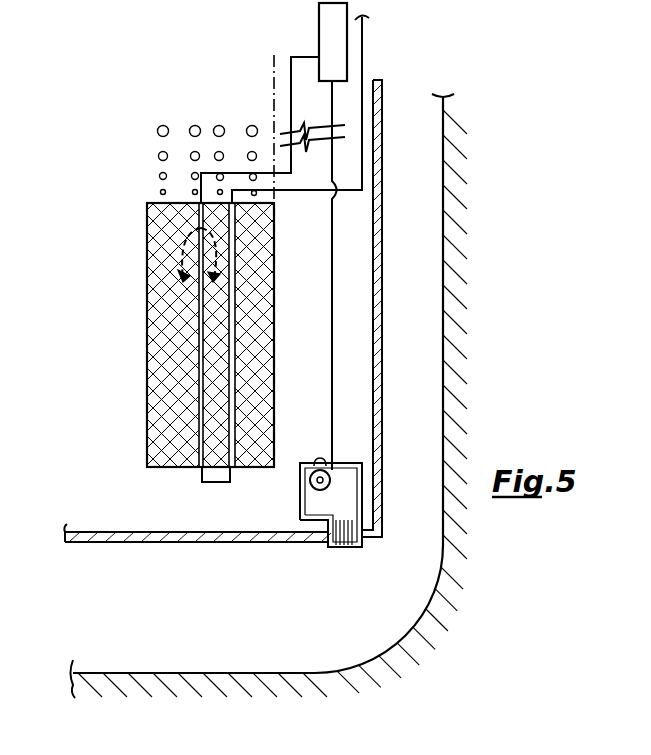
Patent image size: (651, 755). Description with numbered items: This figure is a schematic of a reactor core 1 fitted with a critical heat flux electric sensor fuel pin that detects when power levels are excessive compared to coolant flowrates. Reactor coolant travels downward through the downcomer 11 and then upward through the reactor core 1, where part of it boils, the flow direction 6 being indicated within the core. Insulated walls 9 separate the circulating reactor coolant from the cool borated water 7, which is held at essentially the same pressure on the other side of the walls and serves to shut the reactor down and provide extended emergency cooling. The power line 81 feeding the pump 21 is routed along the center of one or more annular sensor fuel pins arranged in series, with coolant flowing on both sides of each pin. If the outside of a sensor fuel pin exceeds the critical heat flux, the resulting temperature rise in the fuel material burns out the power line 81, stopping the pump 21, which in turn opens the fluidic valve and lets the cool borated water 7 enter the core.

The reactor core 1 is at (122, 369).
The air flow direction 6 is at (197, 265).
The cool borated water 7 is at (417, 379).
The insulated walls 9 is at (383, 450).
The downcomer 11 is at (306, 383).
The pump 21 is at (319, 28).
The power line 81 is at (303, 211).